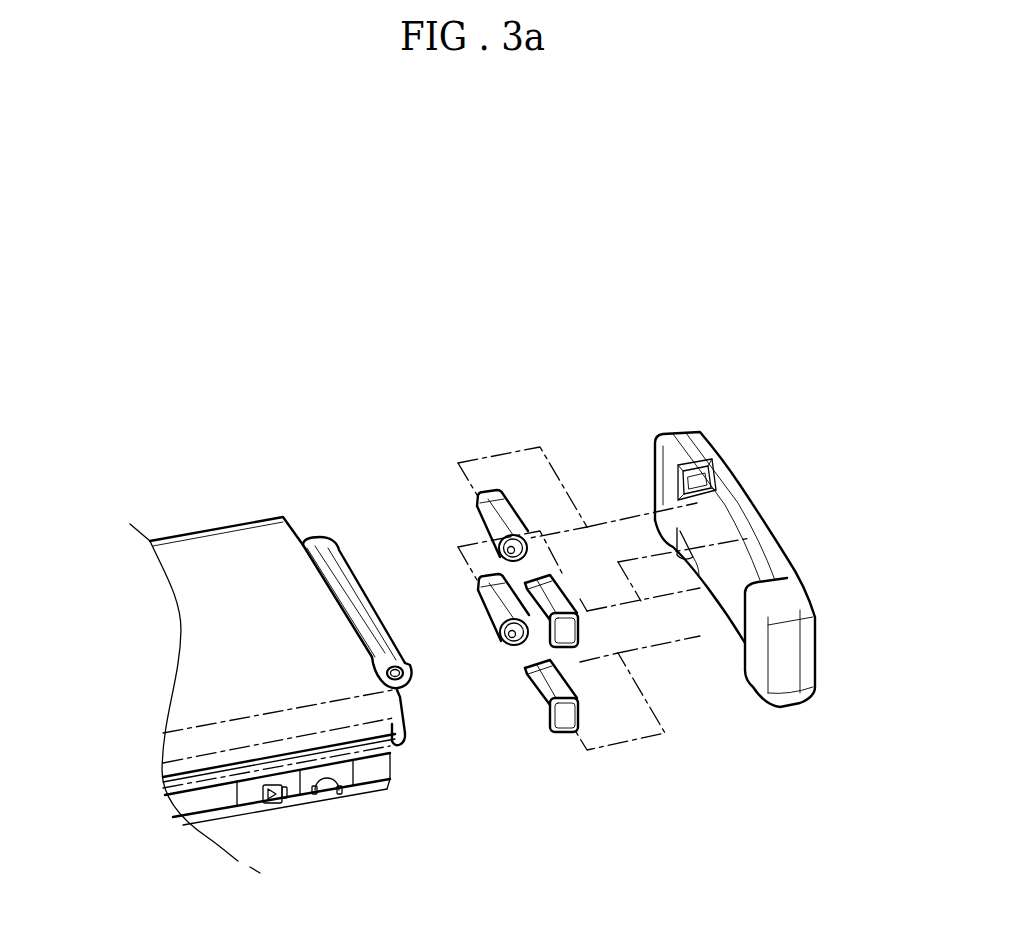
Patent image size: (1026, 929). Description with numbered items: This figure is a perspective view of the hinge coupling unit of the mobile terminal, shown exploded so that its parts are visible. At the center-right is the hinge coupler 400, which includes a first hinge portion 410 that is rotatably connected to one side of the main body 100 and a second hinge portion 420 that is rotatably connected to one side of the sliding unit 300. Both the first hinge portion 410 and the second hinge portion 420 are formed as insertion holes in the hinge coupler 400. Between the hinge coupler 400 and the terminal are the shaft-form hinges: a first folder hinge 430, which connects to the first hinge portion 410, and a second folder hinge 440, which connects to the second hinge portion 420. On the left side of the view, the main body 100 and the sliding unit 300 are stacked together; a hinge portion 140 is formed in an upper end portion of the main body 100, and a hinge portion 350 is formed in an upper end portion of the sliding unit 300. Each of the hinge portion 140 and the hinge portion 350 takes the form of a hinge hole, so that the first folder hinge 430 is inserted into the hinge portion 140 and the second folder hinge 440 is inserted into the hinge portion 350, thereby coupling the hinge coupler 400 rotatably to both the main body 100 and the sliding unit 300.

The main body 100 is at (363, 757).
The hinge portion 140 is at (405, 738).
The sliding unit 300 is at (218, 512).
The hinge portion 350 is at (355, 594).
The hinge coupler 400 is at (732, 529).
The first hinge portion 410 is at (713, 575).
The second hinge portion 420 is at (690, 478).
The first folder hinge 430 is at (493, 622).
The second folder hinge 440 is at (553, 590).